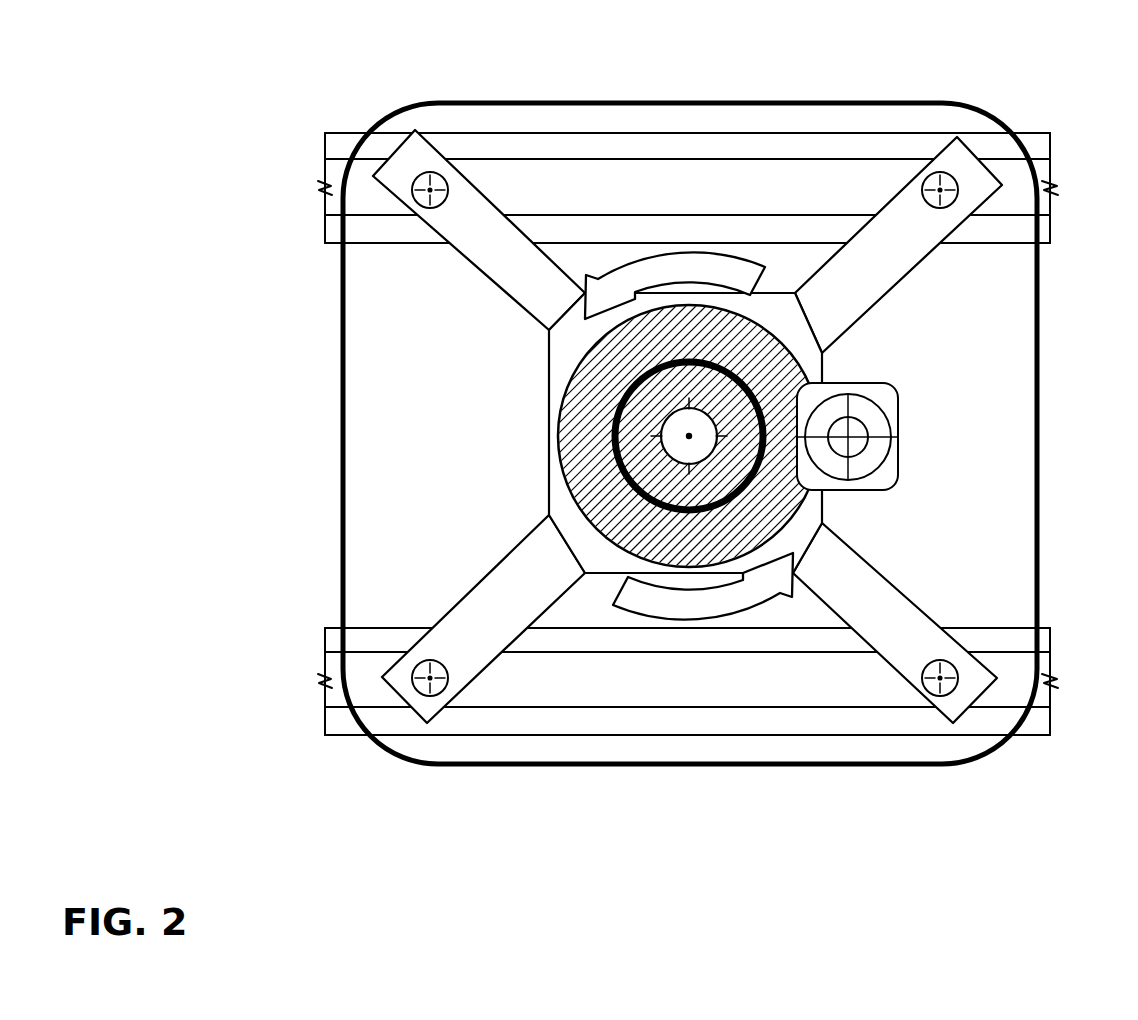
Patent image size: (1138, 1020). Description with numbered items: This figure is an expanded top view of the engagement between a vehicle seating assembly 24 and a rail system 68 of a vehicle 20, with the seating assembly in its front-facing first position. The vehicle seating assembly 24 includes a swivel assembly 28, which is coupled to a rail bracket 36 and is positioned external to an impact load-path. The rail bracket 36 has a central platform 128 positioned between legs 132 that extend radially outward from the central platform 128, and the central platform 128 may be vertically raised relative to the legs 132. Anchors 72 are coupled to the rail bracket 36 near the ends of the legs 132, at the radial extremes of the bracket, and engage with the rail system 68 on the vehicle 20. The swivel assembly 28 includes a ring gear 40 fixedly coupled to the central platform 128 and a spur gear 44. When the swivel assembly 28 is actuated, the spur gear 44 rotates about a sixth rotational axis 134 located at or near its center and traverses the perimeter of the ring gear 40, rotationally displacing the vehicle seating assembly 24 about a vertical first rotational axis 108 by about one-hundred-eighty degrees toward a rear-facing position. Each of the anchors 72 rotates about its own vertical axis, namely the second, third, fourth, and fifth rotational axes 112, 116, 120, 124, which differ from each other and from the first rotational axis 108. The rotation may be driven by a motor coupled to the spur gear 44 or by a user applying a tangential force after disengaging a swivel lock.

The vehicle 20 is at (172, 114).
The vehicle seating assembly 24 is at (416, 94).
The swivel assembly 28 is at (812, 512).
The rail bracket 36 is at (828, 362).
The ring gear 40 is at (766, 322).
The spur gear 44 is at (900, 440).
The rail system 68 is at (568, 130).
The anchors 72 is at (430, 190).
The first rotational axis 108 is at (689, 436).
The second rotational axis 112 is at (430, 190).
The third rotational axis 116 is at (940, 190).
The fourth rotational axis 120 is at (430, 678).
The fifth rotational axis 124 is at (940, 678).
The central platform 128 is at (603, 555).
The legs 132 is at (897, 235).
The sixth rotational axis 134 is at (862, 423).